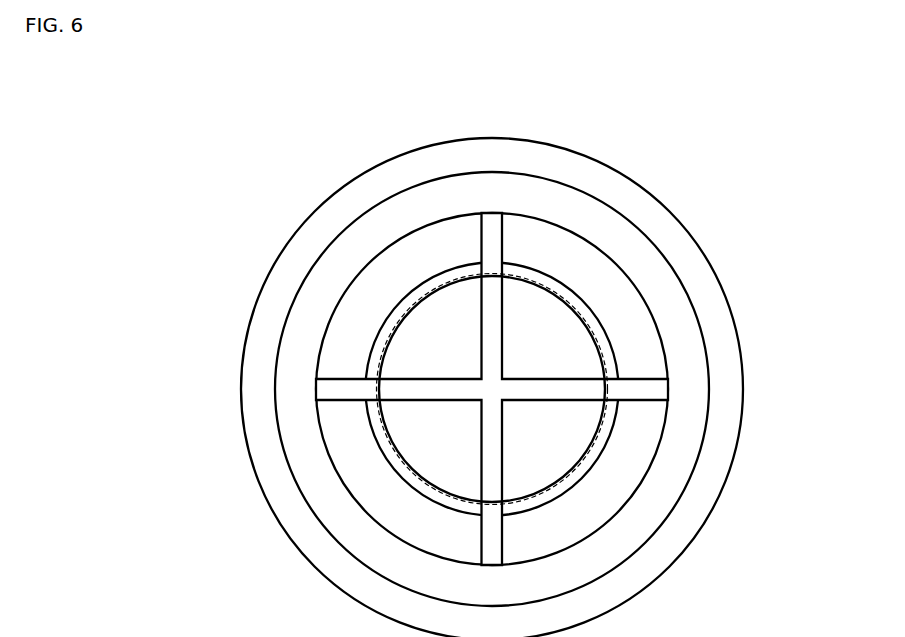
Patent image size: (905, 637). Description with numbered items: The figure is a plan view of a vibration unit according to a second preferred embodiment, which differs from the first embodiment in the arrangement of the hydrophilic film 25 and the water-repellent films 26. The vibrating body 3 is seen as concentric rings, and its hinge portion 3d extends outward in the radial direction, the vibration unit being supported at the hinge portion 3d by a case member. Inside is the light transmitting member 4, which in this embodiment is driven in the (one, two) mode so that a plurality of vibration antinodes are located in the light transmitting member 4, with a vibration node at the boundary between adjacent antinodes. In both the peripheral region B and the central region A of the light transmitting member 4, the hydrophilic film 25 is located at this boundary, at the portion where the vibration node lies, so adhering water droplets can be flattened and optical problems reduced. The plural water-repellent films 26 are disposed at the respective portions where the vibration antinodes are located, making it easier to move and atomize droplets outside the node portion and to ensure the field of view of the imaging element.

The vibrating body 3 is at (683, 278).
The hinge portion 3d is at (742, 382).
The light transmitting member 4 is at (495, 213).
The hydrophilic film 25 is at (503, 247).
The water-repellent films 26 is at (325, 317).
The central region A is at (423, 312).
The peripheral region B is at (460, 277).